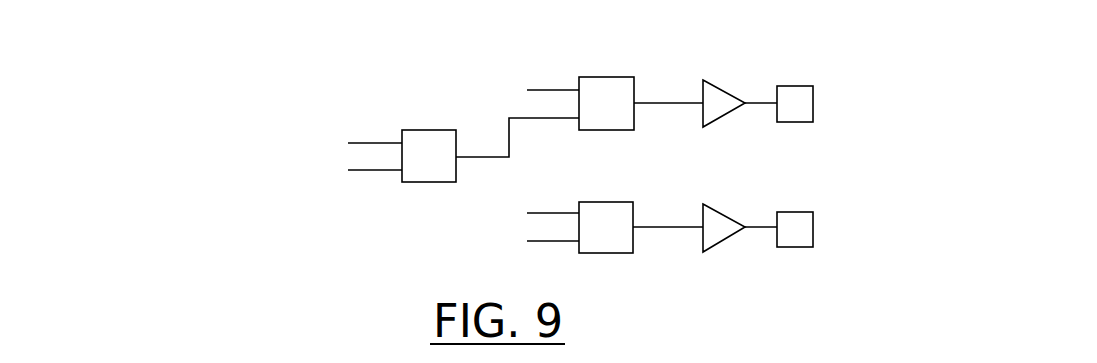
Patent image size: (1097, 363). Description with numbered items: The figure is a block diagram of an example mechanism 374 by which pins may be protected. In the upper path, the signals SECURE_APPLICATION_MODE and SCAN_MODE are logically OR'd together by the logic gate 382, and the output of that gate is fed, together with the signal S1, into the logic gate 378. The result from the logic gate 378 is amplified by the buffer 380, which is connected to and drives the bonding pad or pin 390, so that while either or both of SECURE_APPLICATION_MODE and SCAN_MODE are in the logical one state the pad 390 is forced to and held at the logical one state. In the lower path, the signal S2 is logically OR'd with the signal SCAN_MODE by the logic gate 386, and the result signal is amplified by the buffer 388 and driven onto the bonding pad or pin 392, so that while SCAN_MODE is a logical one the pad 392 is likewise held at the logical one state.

The mechanism 374 is at (267, 67).
The logic gate 378 is at (606, 77).
The buffer 380 is at (718, 115).
The logic gate 382 is at (428, 182).
The logic gate 386 is at (603, 202).
The buffer 388 is at (718, 240).
The bonding pad or pin 390 is at (798, 86).
The bonding pad or pin 392 is at (798, 212).